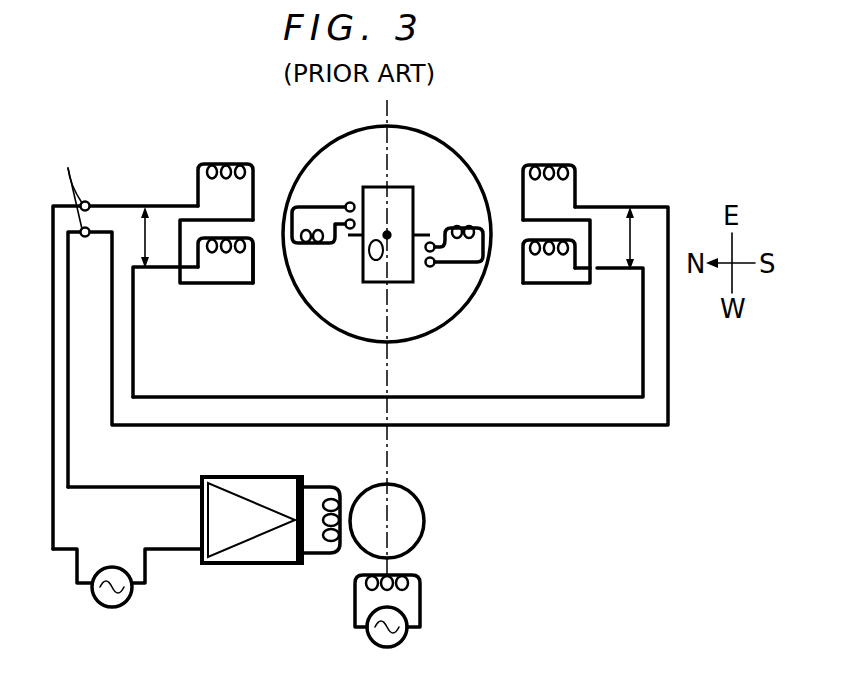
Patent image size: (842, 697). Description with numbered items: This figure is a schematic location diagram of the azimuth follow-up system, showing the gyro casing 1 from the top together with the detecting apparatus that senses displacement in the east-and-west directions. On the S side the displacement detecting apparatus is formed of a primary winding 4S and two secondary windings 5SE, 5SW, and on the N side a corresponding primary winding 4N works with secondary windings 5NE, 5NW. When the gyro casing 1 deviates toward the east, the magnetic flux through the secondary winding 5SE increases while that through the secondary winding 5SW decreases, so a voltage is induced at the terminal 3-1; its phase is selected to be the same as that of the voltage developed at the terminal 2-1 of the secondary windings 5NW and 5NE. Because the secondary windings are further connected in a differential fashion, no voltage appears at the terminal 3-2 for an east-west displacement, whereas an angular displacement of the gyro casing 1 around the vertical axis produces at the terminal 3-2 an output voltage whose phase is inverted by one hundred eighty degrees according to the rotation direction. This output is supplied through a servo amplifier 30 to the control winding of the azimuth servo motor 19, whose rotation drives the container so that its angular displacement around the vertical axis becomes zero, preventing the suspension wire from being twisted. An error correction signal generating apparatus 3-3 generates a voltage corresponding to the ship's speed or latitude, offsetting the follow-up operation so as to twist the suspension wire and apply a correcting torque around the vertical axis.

The gyro casing 1 is at (446, 162).
The primary winding 4N is at (318, 244).
The primary winding 4S is at (460, 228).
The secondary winding 5NE is at (232, 165).
The secondary winding 5NW is at (228, 278).
The secondary winding 5SE is at (553, 165).
The secondary winding 5SW is at (550, 280).
The terminal 2-1 is at (158, 232).
The terminal 3-1 is at (636, 243).
The terminal 3-2 is at (66, 192).
The error correction signal generating apparatus 3-3 is at (108, 564).
The servo amplifier 30 is at (240, 565).
The azimuth servo motor 19 is at (424, 522).